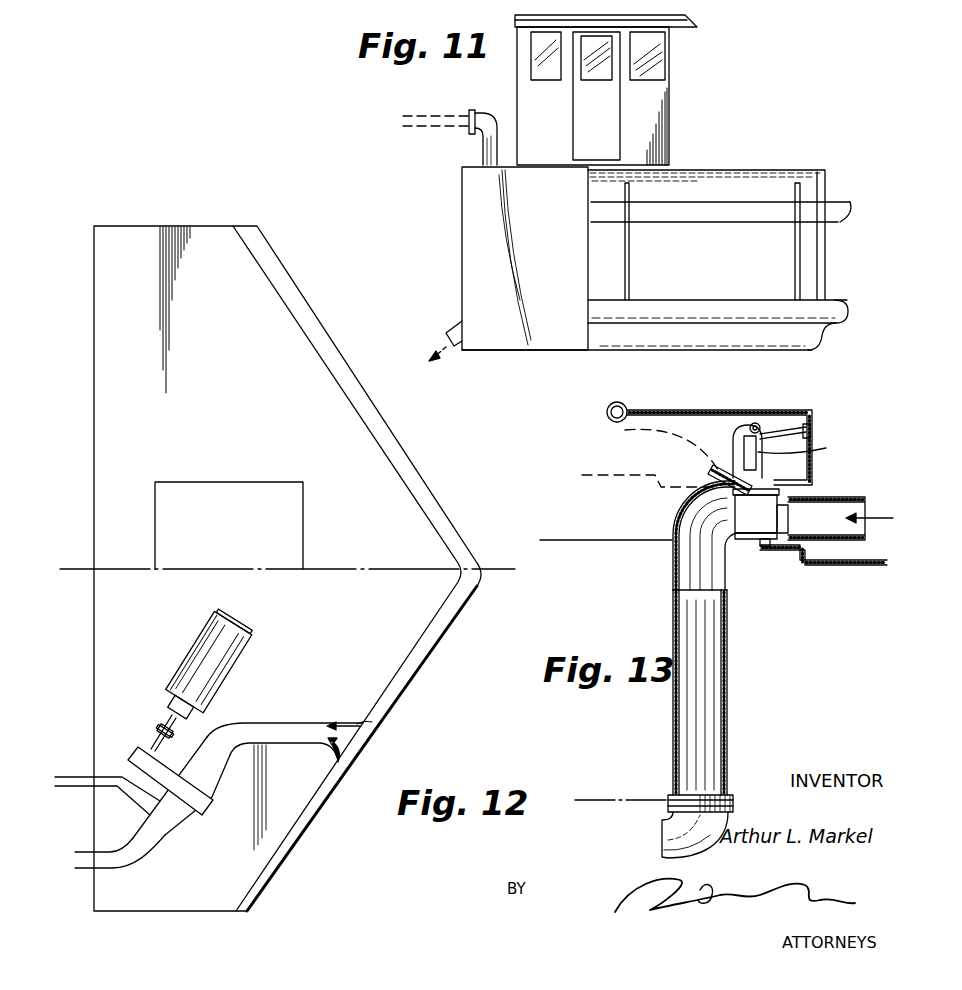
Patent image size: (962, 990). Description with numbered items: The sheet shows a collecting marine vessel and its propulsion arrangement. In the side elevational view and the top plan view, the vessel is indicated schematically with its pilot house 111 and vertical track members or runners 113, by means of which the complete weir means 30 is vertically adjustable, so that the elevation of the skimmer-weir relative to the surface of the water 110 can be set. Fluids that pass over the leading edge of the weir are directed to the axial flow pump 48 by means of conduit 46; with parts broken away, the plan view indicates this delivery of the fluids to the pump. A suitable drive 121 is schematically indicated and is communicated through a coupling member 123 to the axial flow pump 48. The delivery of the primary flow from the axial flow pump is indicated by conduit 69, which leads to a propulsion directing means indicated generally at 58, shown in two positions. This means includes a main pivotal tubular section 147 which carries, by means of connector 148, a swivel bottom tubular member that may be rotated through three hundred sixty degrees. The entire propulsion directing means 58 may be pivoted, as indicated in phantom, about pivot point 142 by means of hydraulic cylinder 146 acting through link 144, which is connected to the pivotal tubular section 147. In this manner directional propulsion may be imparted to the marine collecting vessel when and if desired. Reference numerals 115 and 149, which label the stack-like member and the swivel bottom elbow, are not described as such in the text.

In FIG. 11, the weir means 30 is at (846, 203).
In FIG. 12, the weir means 30 is at (425, 472).
In FIG. 12, the conduit 46 is at (295, 709).
In FIG. 12, the axial flow pump 48 is at (201, 820).
In FIG. 11, the propulsion directing means 58 is at (448, 327).
In FIG. 13, the propulsion directing means 58 is at (592, 478).
In FIG. 12, the conduit 69 is at (78, 868).
In FIG. 13, the conduit 69 is at (857, 492).
In FIG. 13, the water 110 is at (578, 795).
In FIG. 11, the pilot house 111 is at (682, 107).
In FIG. 12, the pilot house 111 is at (231, 479).
In FIG. 11, the vertical track members or runners 113 is at (635, 244).
In FIG. 11, the oil stack / oil line 115 is at (481, 147).
In FIG. 12, the oil stack / oil line 115 is at (68, 776).
In FIG. 12, the drive 121 is at (246, 656).
In FIG. 12, the coupling member 123 is at (158, 727).
In FIG. 13, the pivot point 142 is at (716, 481).
In FIG. 13, the link 144 is at (760, 517).
In FIG. 13, the hydraulic cylinder 146 is at (797, 450).
In FIG. 13, the main pivotal tubular section 147 is at (738, 690).
In FIG. 13, the connector 148 is at (729, 795).
In FIG. 13, the outlet elbow 149 is at (668, 840).